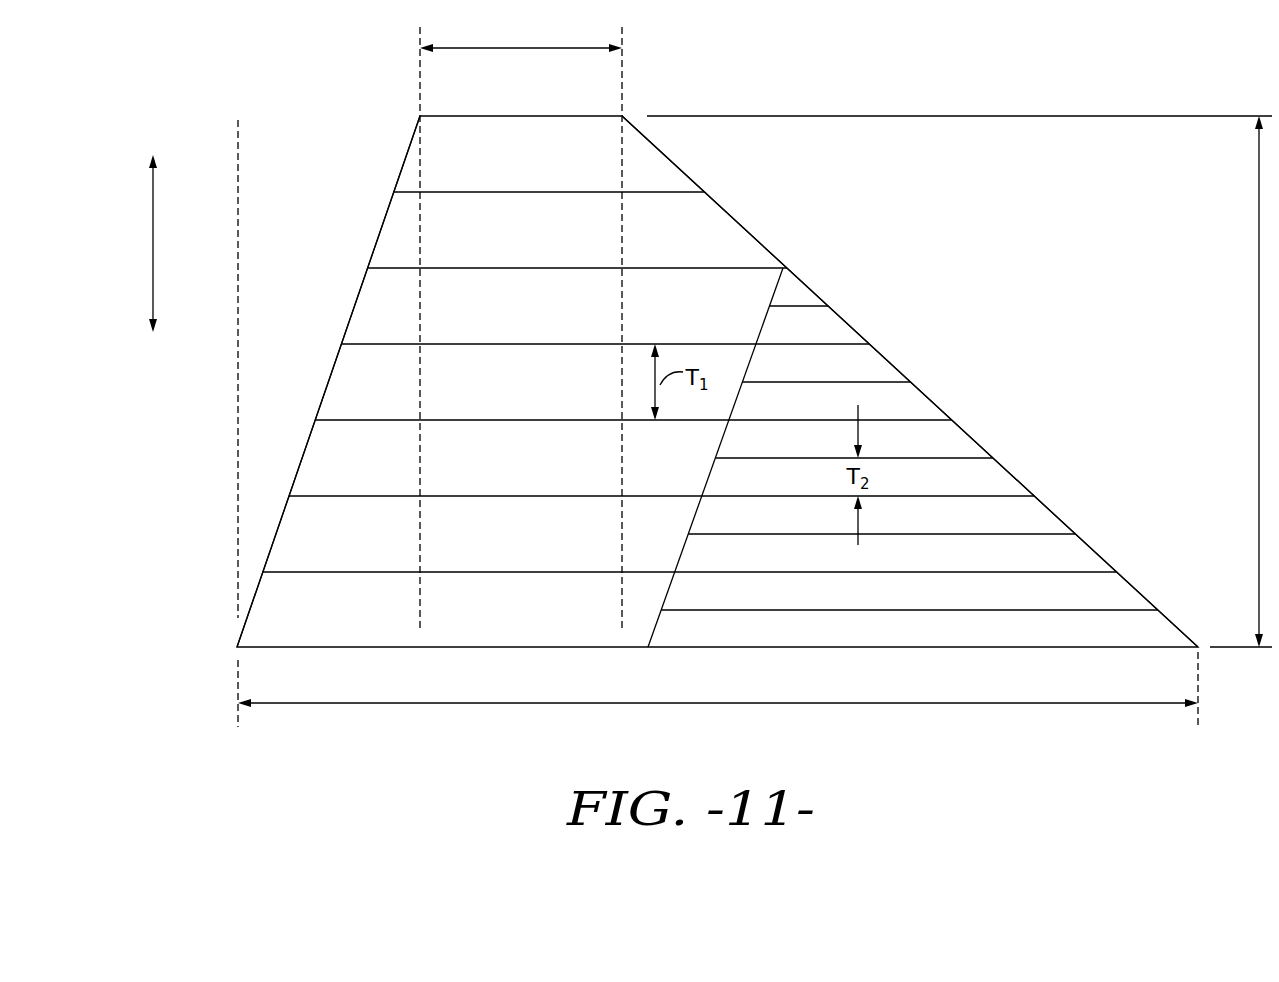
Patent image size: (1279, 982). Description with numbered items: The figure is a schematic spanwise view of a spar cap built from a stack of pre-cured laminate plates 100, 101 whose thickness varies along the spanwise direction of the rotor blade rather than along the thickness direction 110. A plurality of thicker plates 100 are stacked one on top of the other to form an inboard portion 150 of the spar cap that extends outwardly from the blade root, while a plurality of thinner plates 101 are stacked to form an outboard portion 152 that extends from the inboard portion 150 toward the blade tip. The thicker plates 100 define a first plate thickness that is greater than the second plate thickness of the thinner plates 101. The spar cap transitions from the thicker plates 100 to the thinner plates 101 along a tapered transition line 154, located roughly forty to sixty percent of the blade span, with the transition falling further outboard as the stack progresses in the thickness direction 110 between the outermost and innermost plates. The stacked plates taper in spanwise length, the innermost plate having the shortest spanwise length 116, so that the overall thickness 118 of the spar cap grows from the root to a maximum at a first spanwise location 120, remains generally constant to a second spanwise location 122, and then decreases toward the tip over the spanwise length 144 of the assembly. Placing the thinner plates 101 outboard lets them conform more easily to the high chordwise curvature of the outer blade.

The thicker pre-cured laminate plates 100 is at (535, 623).
The thinner pre-cured laminate plates 101 is at (932, 435).
The thickness direction 110 is at (153, 250).
The shortest spanwise length 116 is at (495, 46).
The overall thickness of the spar cap 118 is at (1259, 386).
The first spanwise location 120 is at (419, 80).
The second spanwise location 122 is at (624, 80).
The spanwise length 144 is at (933, 705).
The inboard portion of the spar cap 150 is at (318, 295).
The outboard portion of the spar cap 152 is at (1027, 292).
The tapered transition line 154 is at (762, 330).